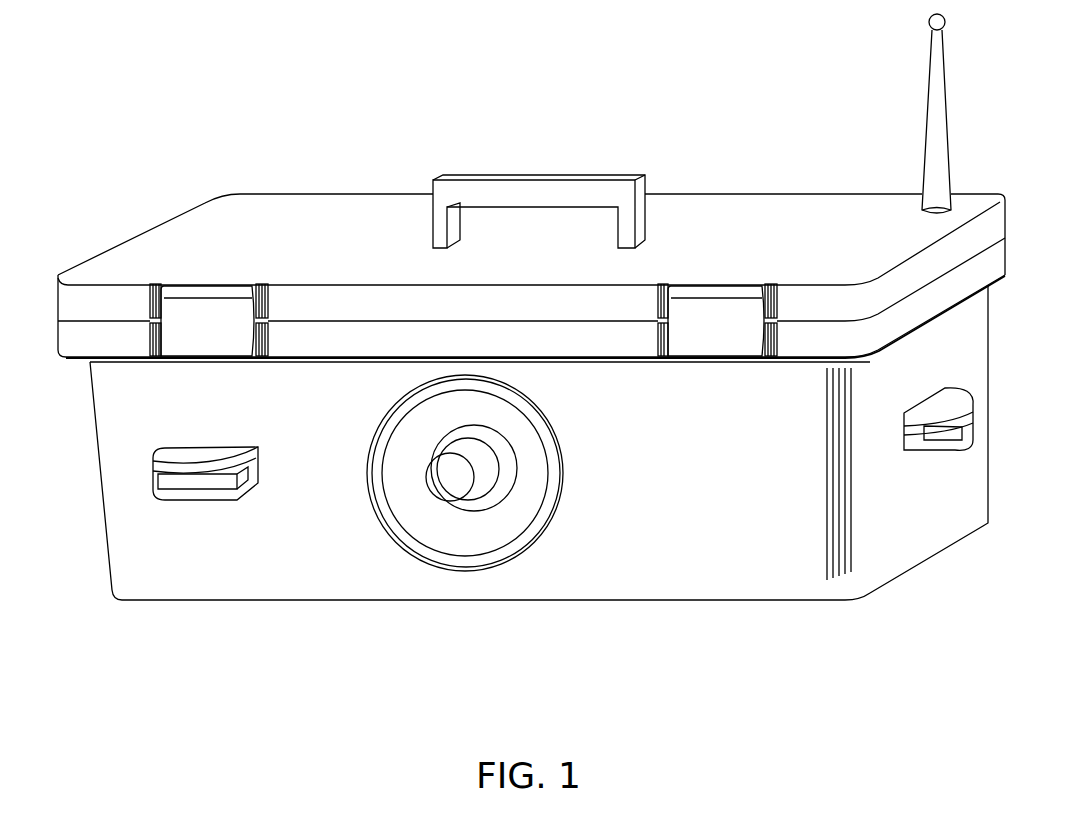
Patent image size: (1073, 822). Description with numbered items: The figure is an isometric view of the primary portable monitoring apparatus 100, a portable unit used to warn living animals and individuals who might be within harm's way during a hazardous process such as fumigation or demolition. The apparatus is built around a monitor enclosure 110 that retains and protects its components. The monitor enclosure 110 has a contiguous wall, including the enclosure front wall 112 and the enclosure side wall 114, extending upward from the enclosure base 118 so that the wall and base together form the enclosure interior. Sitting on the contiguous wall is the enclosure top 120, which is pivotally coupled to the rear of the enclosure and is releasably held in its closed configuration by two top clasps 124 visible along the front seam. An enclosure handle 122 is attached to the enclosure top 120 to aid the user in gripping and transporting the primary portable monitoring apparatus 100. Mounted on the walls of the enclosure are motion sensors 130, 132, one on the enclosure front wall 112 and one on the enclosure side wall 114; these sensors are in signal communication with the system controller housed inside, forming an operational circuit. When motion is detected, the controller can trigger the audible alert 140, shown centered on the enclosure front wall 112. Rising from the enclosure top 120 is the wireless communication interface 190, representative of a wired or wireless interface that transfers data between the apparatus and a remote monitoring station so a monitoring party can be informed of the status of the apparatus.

The primary portable monitoring apparatus 100 is at (145, 125).
The monitor enclosure 110 is at (110, 612).
The enclosure front wall 112 is at (640, 583).
The enclosure side wall 114 is at (925, 533).
The enclosure base 118 is at (299, 612).
The enclosure top 120 is at (312, 207).
The enclosure handle 122 is at (542, 175).
The top clasp 124 is at (200, 333).
The motion sensor 130 is at (190, 486).
The motion sensor 132 is at (970, 428).
The audible alert 140 is at (430, 557).
The wireless communication interface 190 is at (943, 122).